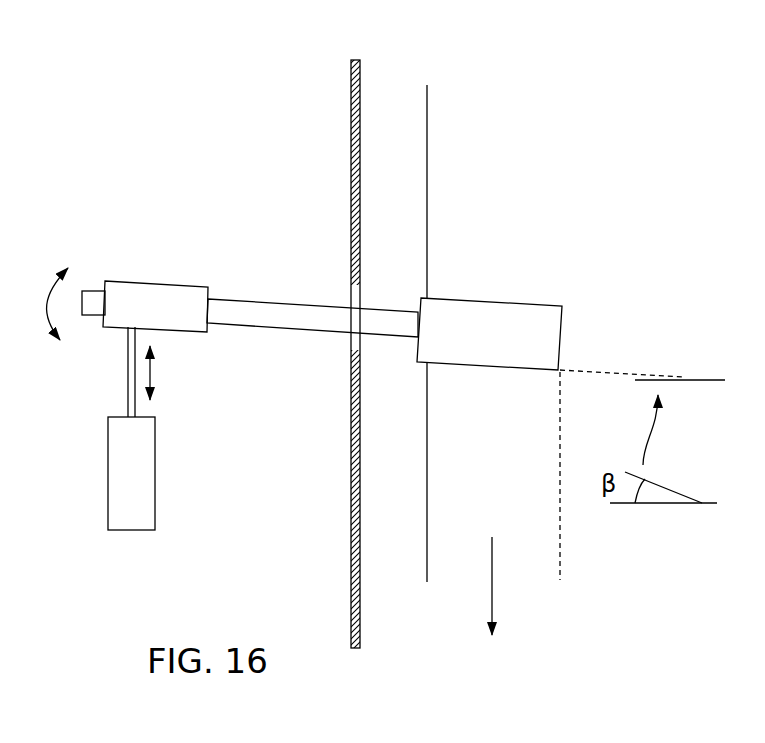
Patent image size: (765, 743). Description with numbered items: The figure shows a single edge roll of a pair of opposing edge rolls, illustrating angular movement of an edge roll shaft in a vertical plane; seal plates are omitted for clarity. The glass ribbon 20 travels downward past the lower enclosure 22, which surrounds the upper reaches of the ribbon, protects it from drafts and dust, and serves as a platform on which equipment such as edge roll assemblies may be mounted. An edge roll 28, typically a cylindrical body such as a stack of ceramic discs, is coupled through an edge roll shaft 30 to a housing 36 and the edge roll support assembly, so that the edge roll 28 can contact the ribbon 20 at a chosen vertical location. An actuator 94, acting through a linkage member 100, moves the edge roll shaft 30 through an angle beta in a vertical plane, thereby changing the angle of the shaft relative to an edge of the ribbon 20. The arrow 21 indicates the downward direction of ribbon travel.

The glass ribbon 20 is at (424, 109).
The direction of web travel 21 is at (489, 583).
The lower enclosure 22 is at (352, 89).
The edge roll 28 is at (488, 298).
The edge roll shaft 30 is at (306, 332).
The housing 36 is at (137, 295).
The actuator 94 is at (108, 465).
The linkage member 100 is at (127, 365).